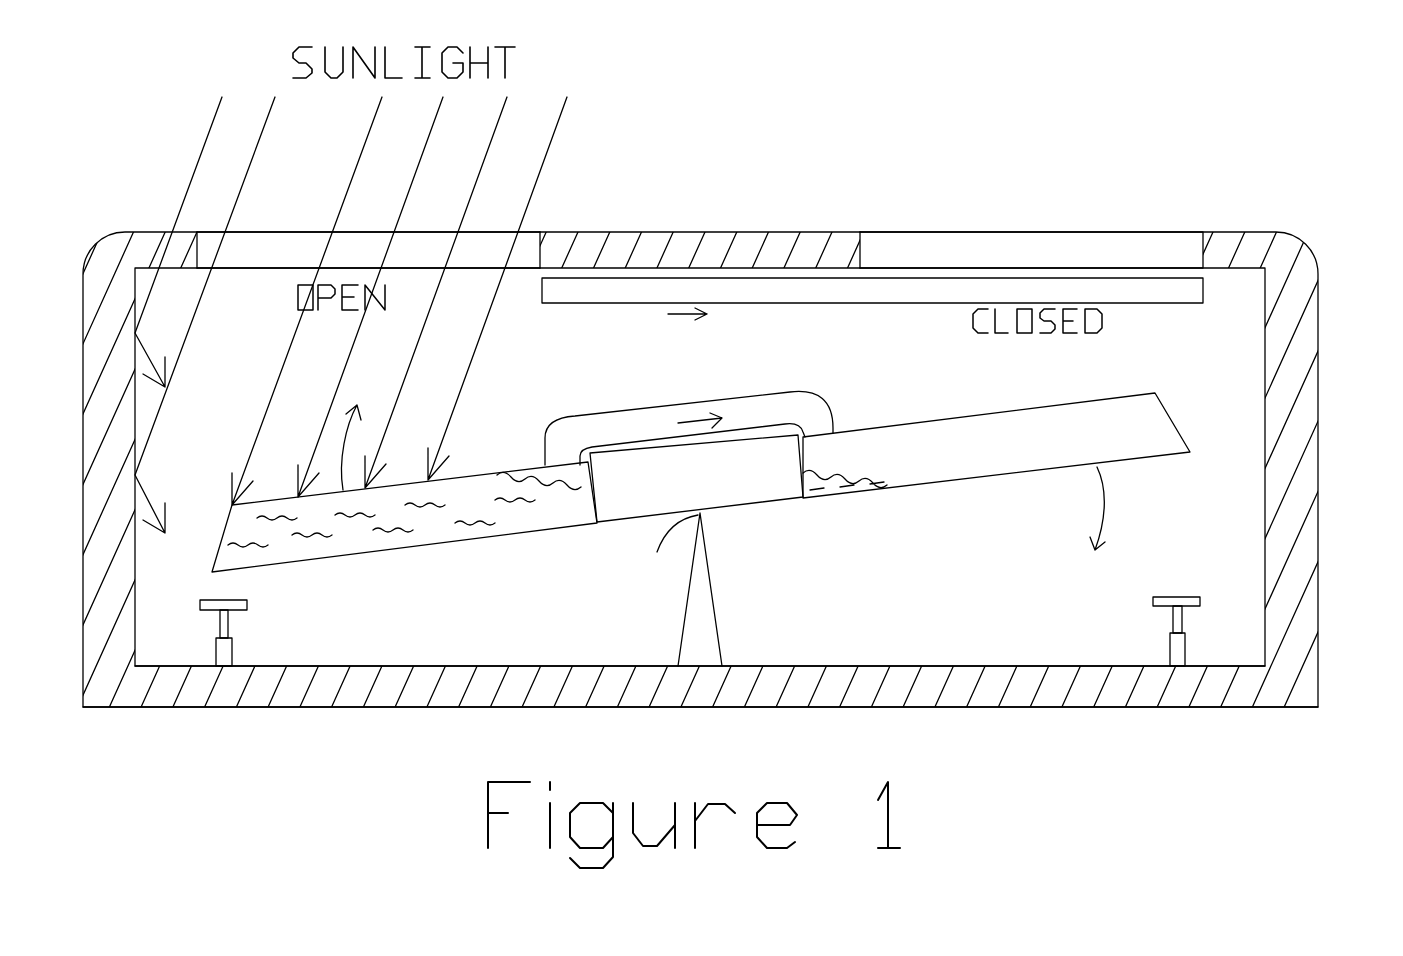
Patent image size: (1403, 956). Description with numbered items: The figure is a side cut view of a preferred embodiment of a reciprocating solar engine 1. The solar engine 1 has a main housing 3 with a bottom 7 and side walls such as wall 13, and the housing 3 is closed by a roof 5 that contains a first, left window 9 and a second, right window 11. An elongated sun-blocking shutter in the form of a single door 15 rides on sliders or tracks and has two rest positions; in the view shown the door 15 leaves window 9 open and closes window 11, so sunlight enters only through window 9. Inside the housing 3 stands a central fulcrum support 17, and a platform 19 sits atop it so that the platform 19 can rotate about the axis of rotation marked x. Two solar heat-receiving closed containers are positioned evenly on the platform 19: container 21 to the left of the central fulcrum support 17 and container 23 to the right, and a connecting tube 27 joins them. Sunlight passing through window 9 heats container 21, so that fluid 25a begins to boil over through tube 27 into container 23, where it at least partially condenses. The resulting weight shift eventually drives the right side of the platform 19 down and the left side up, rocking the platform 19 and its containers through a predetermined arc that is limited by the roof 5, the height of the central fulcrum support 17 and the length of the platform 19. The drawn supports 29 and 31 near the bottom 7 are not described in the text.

The reciprocating solar engine 1 is at (998, 157).
The main housing 3 is at (1320, 468).
The roof 5 is at (700, 230).
The bottom 7 is at (842, 662).
The first window 9 is at (483, 250).
The second window 11 is at (1130, 250).
The side wall 13 is at (137, 300).
The door 15 is at (875, 293).
The central fulcrum support 17 is at (698, 595).
The platform 19 is at (786, 505).
The solar heat-receiving closed container 21 is at (487, 473).
The solar heat-receiving closed container 23 is at (907, 422).
The fluid 25a is at (427, 522).
The tube 27 is at (602, 435).
The left support stand 29 is at (231, 618).
The right support stand 31 is at (1173, 612).